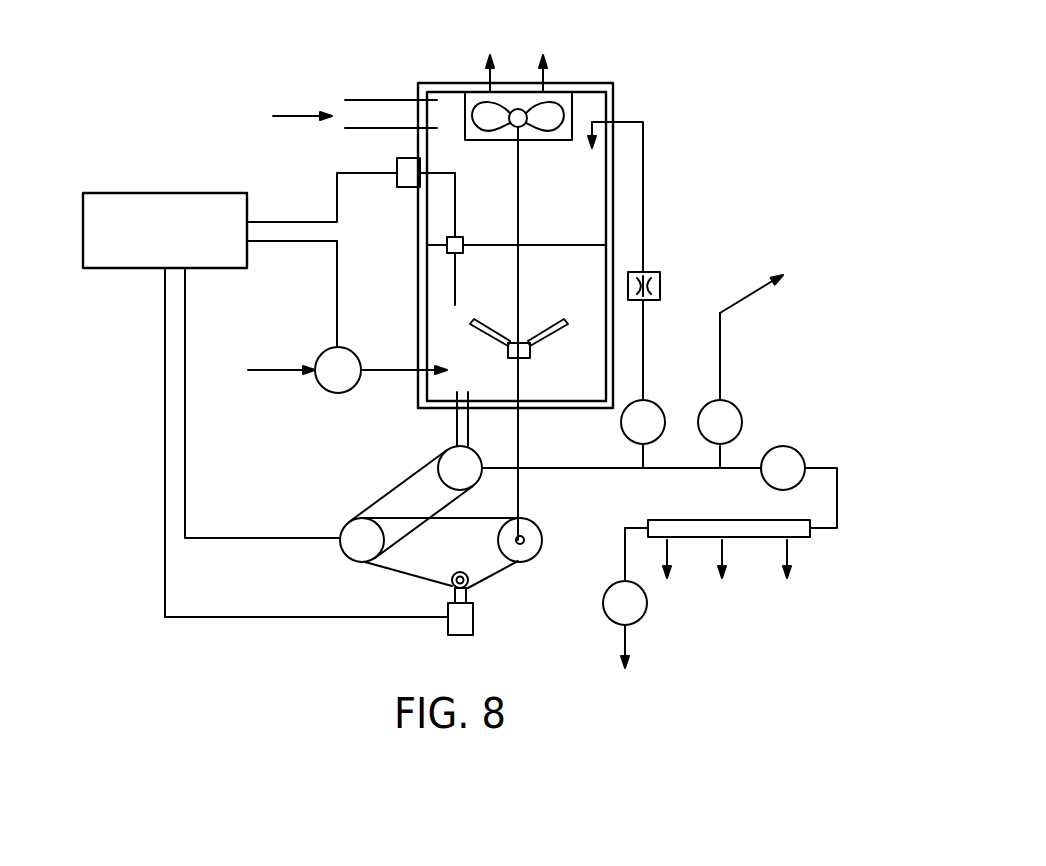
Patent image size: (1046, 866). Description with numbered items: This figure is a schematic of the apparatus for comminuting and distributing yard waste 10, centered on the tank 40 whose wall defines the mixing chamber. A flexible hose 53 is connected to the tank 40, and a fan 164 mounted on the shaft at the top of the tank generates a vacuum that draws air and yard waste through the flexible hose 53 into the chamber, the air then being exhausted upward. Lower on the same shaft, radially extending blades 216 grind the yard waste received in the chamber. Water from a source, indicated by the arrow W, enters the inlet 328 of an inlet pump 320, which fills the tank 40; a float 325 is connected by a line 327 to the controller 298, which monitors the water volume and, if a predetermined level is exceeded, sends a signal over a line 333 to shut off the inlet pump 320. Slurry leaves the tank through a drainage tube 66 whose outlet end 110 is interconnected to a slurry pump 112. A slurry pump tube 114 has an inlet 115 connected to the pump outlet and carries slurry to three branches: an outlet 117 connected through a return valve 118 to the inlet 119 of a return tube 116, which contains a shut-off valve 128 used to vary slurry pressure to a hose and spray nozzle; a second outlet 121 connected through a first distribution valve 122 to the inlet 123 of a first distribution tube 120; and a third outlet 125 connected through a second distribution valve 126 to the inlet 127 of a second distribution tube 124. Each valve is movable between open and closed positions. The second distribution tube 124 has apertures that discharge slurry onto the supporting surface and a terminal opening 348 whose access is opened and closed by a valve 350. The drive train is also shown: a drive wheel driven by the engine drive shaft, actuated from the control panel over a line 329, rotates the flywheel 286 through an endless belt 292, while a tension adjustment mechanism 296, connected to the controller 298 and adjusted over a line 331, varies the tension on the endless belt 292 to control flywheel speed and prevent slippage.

The apparatus for comminuting and distributing yard waste 10 is at (761, 635).
The tank 40 is at (613, 102).
The flexible hose 53 is at (387, 97).
The drainage tube 66 is at (455, 422).
The outlet end 110 is at (453, 440).
The slurry pump 112 is at (475, 458).
The slurry pump tube 114 is at (550, 478).
The inlet 115 is at (488, 475).
The return tube 116 is at (643, 208).
The outlet 117 is at (645, 447).
The return valve 118 is at (656, 412).
The inlet 119 is at (643, 400).
The first distribution tube 120 is at (720, 335).
The second outlet 121 is at (713, 447).
The first distribution valve 122 is at (742, 405).
The inlet 123 is at (722, 397).
The second distribution tube 124 is at (798, 537).
The third outlet 125 is at (762, 474).
The second distribution valve 126 is at (800, 450).
The inlet 127 is at (805, 462).
The shut-off valve 128 is at (660, 282).
The fan 164 is at (505, 108).
The blades 216 is at (545, 330).
The flywheel 286 is at (527, 558).
The endless belt 292 is at (407, 583).
The tension adjustment mechanism 296 is at (433, 631).
The controller 298 is at (103, 272).
The inlet pump 320 is at (318, 386).
The float 325 is at (462, 237).
The line 327 is at (337, 193).
The inlet 328 is at (316, 364).
The line 329 is at (220, 538).
The line 331 is at (222, 618).
The line 333 is at (338, 272).
The opening 348 is at (630, 632).
The valve 350 is at (645, 603).